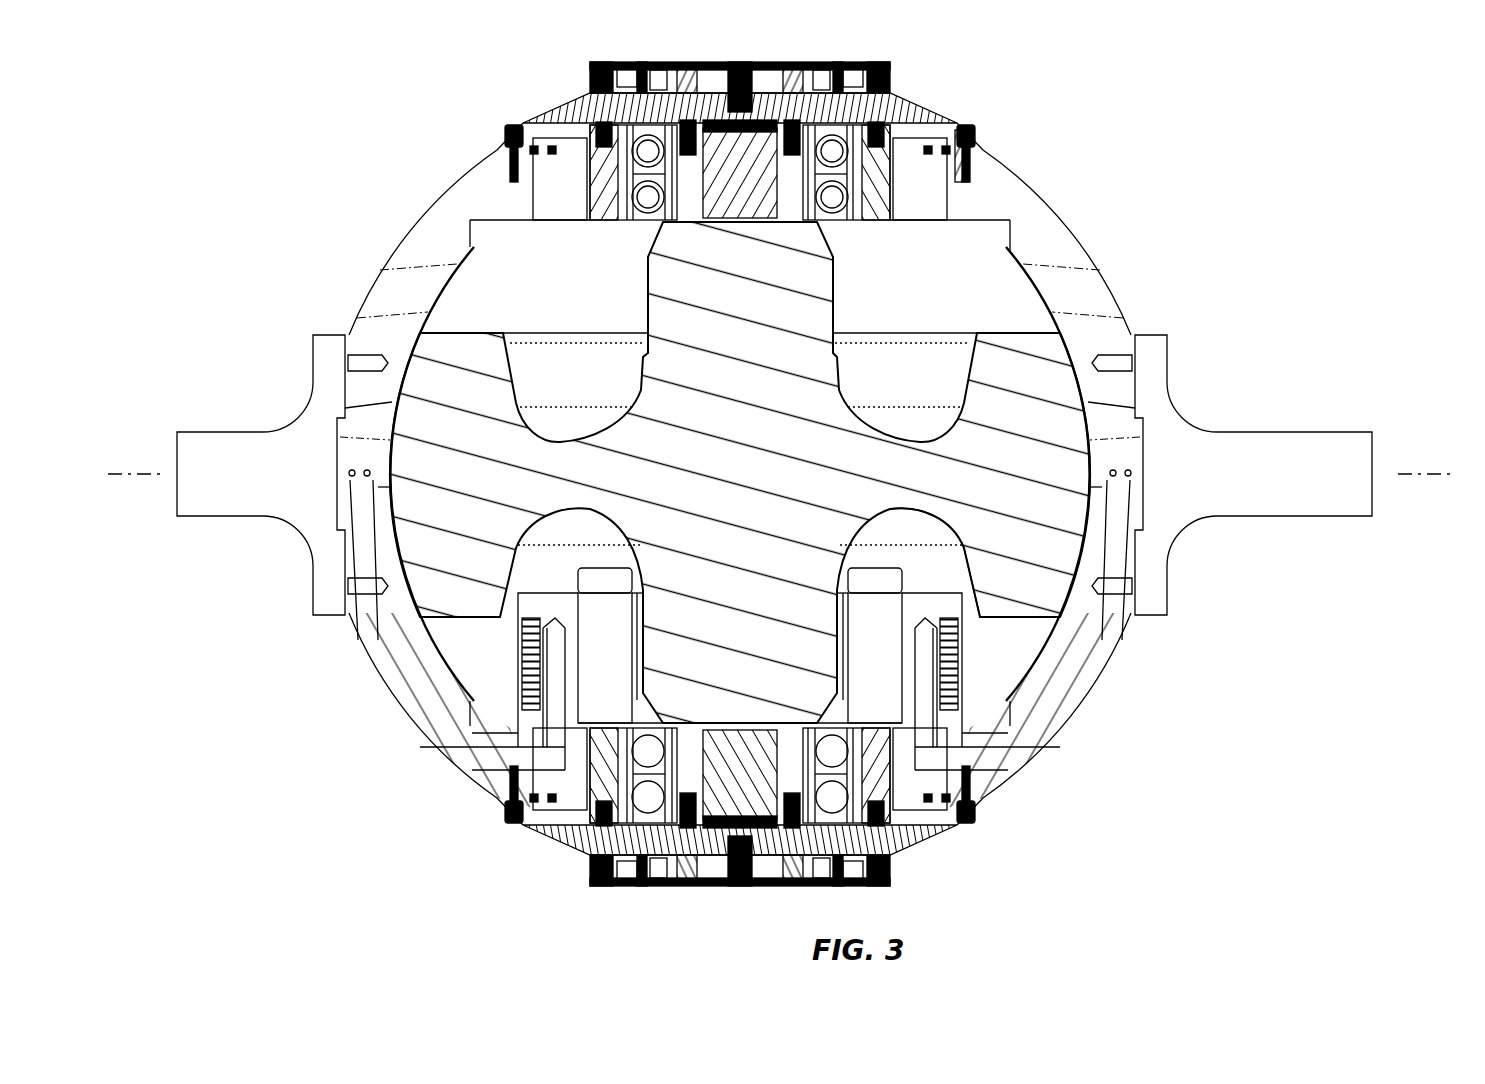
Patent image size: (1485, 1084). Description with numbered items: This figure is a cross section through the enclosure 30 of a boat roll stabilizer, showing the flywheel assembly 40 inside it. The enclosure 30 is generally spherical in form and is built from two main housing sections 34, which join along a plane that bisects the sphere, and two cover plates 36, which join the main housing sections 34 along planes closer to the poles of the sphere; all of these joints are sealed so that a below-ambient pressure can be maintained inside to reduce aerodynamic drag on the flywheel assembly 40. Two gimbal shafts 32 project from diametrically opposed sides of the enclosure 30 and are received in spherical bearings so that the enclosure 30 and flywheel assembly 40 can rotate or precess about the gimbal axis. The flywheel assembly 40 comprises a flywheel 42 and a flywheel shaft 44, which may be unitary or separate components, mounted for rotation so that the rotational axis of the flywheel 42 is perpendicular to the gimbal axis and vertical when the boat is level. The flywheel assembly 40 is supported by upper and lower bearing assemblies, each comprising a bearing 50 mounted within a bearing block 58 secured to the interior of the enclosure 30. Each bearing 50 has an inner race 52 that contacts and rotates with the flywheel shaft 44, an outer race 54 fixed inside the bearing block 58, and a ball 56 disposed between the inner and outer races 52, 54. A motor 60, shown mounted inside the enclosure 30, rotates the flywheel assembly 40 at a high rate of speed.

The enclosure 30 is at (780, 466).
The gimbal shaft 32 is at (265, 452).
The main housing section 34 is at (1047, 235).
The cover plate 36 is at (547, 124).
The flywheel assembly 40 is at (848, 396).
The flywheel 42 is at (1005, 540).
The flywheel shaft 44 is at (717, 617).
The bearing 50 is at (633, 228).
The inner race 52 is at (587, 165).
The outer race 54 is at (645, 200).
The ball 56 is at (625, 222).
The bearing block 58 is at (965, 180).
The motor 60 is at (566, 632).